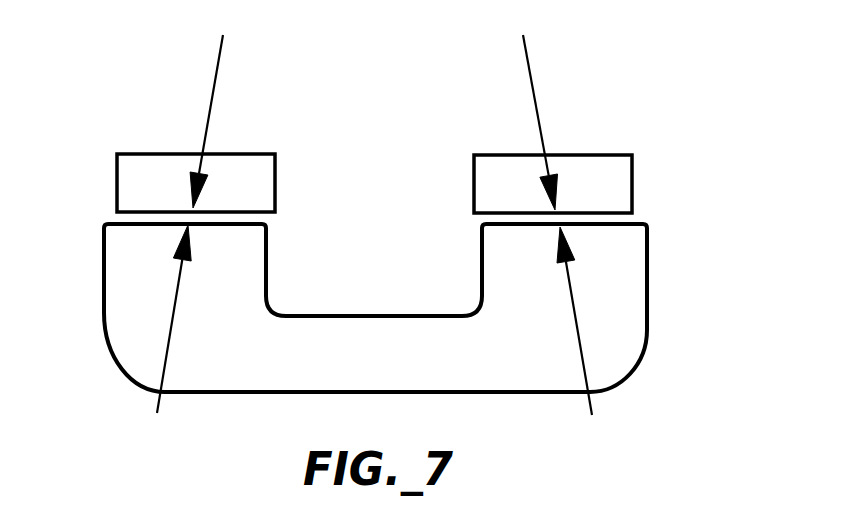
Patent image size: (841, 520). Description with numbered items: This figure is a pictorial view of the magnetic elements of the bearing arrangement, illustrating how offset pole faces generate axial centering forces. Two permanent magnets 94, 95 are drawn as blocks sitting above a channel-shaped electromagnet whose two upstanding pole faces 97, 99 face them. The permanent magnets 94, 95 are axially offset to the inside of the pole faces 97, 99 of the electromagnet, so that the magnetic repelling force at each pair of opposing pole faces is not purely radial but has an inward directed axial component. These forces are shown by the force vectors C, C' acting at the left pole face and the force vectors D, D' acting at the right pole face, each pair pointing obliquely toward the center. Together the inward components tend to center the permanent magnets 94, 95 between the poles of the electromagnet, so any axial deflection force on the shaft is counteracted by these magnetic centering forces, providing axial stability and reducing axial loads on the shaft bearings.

The permanent magnet 94 is at (143, 182).
The permanent magnet 95 is at (603, 190).
The pole face of the electromagnet 97 is at (133, 273).
The pole face of the electromagnet 99 is at (623, 275).
The force vector C is at (177, 121).
The force vector D is at (570, 122).
The force vector C' is at (134, 333).
The force vector D' is at (619, 337).